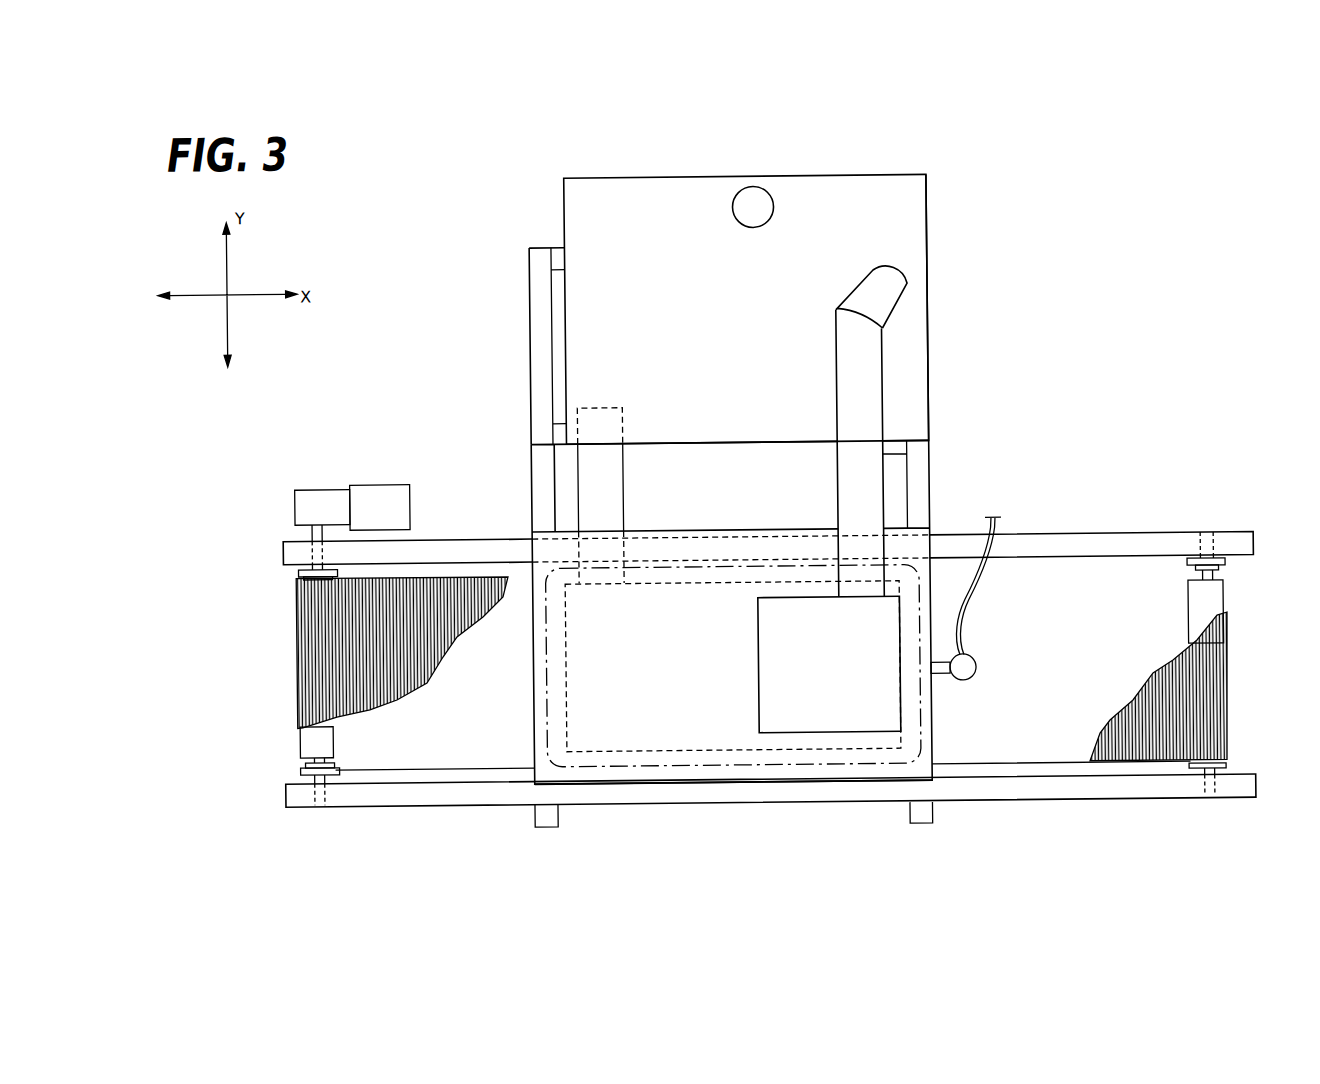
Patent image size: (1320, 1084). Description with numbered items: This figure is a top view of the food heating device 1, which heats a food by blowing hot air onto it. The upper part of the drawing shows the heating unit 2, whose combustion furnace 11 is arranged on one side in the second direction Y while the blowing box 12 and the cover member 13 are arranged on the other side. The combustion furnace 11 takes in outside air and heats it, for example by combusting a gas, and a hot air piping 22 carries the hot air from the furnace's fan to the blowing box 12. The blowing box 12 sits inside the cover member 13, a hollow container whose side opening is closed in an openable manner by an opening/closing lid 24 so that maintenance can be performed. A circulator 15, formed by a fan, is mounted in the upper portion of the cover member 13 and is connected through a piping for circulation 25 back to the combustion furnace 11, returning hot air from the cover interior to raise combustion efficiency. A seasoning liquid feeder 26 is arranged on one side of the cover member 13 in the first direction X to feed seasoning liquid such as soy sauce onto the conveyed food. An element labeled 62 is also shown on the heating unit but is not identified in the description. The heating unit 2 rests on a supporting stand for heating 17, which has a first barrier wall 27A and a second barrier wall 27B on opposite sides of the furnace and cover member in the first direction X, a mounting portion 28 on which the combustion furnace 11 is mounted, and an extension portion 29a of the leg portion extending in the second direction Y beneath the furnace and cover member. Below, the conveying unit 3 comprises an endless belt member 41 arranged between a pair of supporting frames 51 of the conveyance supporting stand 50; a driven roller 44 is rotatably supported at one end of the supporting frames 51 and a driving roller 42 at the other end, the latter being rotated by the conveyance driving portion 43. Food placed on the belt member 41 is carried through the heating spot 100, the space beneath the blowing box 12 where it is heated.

The food heating device 1 is at (1065, 300).
The heating unit 2 is at (604, 176).
The conveying unit 3 is at (1122, 802).
The combustion furnace 11 is at (925, 359).
The blowing box 12 is at (626, 744).
The cover member 13 is at (915, 767).
The circulator 15 is at (840, 723).
The supporting stand for heating 17 is at (530, 291).
The hot air piping 22 is at (585, 508).
The opening/closing lid 24 is at (714, 787).
The piping for circulation 25 is at (874, 478).
The seasoning liquid feeder 26 is at (976, 660).
The first barrier wall 27A is at (928, 455).
The second barrier wall 27B is at (541, 478).
The mounting portion 28 is at (543, 258).
The extension portion 29a is at (544, 823).
The belt member 41 is at (304, 681).
The driving roller 42 is at (300, 742).
The conveyance driving portion 43 is at (320, 496).
The driven roller 44 is at (1226, 771).
The conveyance supporting stand 50 is at (450, 797).
The supporting frames 51 is at (283, 543).
The handle 62 is at (740, 198).
The heating spot 100 is at (574, 765).